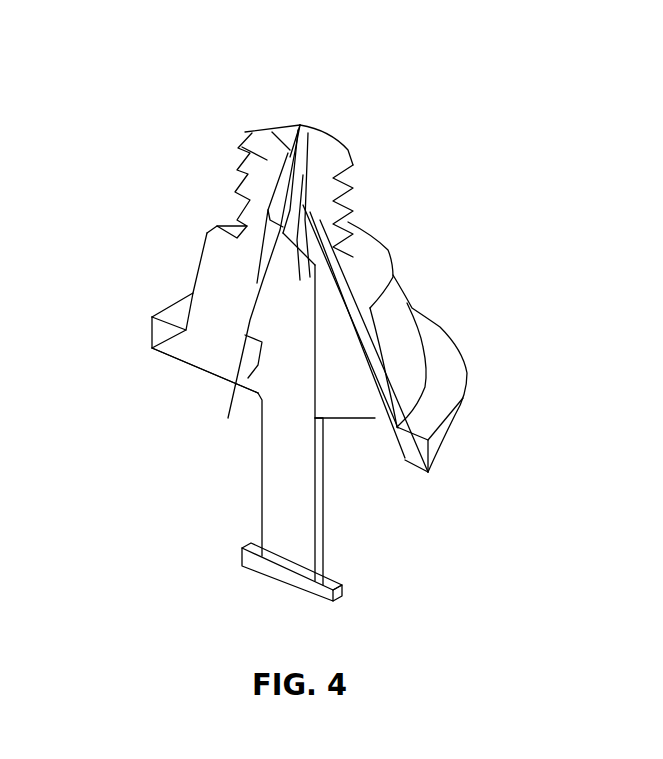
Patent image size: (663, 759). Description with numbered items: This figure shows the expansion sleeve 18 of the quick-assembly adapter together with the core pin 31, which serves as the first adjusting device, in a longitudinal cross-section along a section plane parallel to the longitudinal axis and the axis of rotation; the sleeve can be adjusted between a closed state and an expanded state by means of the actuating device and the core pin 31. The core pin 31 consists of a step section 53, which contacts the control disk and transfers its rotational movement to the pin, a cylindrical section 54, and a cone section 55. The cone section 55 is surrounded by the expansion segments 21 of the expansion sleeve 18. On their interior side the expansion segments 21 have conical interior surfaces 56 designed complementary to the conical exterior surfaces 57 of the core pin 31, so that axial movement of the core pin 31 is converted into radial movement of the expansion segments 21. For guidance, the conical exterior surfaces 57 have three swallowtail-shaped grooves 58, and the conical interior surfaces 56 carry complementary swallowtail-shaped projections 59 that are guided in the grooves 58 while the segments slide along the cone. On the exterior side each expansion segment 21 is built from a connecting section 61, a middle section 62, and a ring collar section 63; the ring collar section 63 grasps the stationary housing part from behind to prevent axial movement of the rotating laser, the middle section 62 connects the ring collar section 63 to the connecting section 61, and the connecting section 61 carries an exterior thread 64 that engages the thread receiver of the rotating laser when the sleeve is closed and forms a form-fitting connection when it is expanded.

The expansion sleeve 18 is at (288, 107).
The expansion segments 21 is at (272, 133).
The core pin 31 is at (330, 513).
The step section 53 is at (336, 583).
The cylindrical section 54 is at (260, 512).
The cone section 55 is at (339, 377).
The conical interior surfaces 56 is at (245, 350).
The conical exterior surfaces 57 is at (257, 282).
The swallowtail-shaped grooves 58 is at (302, 253).
The swallowtail-shaped projections 59 is at (303, 175).
The connecting section 61 is at (234, 184).
The middle section 62 is at (194, 292).
The ring collar section 63 is at (152, 321).
The exterior thread 64 is at (353, 212).